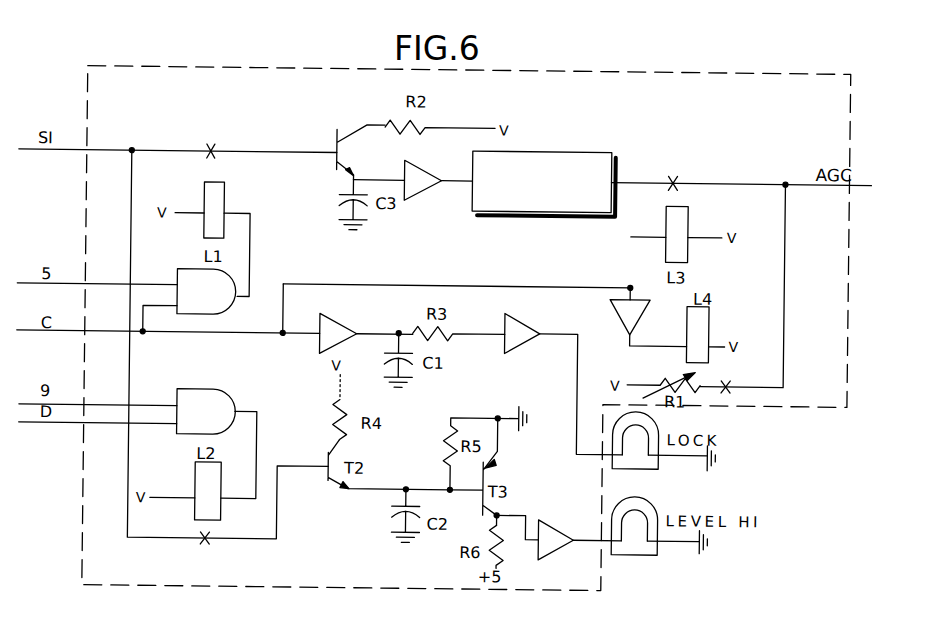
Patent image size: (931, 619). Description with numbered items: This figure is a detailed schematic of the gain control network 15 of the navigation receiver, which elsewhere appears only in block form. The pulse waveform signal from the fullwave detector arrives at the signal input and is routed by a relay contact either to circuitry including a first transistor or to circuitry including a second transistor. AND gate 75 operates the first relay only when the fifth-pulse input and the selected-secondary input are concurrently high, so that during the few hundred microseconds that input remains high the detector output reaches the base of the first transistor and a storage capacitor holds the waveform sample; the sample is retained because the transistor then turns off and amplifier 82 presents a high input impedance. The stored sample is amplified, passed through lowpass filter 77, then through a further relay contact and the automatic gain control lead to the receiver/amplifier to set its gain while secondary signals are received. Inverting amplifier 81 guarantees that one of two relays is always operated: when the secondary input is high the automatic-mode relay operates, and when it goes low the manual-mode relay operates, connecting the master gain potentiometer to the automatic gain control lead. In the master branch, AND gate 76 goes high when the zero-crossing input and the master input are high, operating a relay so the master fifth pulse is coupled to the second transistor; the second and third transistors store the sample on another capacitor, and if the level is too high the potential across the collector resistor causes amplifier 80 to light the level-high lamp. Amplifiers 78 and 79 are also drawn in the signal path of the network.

The gain control network 15 is at (85, 548).
The AND gate 75 is at (219, 318).
The AND gate 76 is at (218, 394).
The lowpass filter 77 is at (563, 151).
The amplifier 78 is at (341, 318).
The amplifier 79 is at (526, 316).
The amplifier 80 is at (556, 521).
The inverting amplifier 81 is at (622, 323).
The amplifier 82 is at (412, 197).